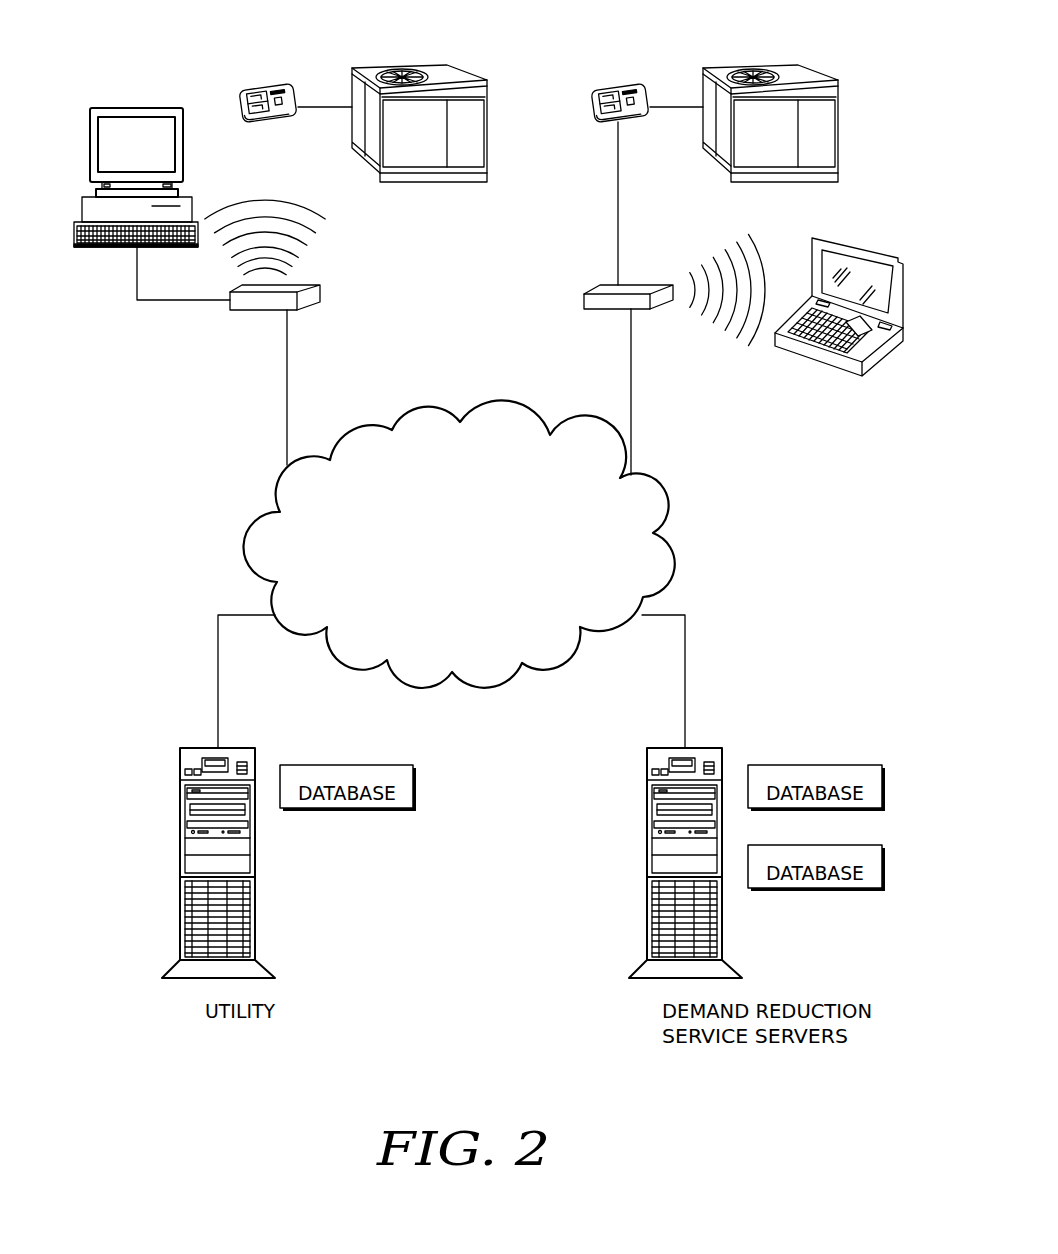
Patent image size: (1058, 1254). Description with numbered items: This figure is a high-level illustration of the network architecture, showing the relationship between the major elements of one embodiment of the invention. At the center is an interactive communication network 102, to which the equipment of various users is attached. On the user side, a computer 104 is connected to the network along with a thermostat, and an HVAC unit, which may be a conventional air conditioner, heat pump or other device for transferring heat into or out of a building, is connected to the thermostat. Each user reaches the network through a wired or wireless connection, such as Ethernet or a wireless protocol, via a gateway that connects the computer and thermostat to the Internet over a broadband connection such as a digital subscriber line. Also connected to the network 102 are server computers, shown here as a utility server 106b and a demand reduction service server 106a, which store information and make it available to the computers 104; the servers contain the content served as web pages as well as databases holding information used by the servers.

The interactive communication network 102 is at (666, 500).
The computer 104 is at (148, 108).
The server computer 106a is at (647, 784).
The server computer 106b is at (180, 784).